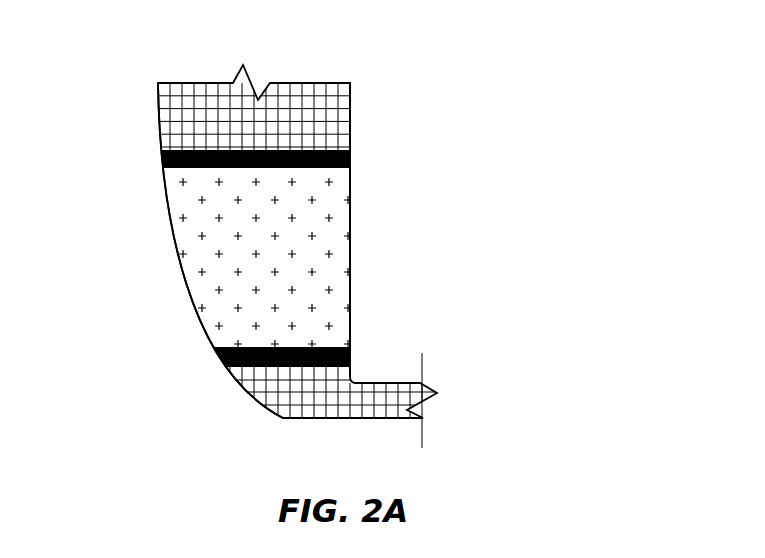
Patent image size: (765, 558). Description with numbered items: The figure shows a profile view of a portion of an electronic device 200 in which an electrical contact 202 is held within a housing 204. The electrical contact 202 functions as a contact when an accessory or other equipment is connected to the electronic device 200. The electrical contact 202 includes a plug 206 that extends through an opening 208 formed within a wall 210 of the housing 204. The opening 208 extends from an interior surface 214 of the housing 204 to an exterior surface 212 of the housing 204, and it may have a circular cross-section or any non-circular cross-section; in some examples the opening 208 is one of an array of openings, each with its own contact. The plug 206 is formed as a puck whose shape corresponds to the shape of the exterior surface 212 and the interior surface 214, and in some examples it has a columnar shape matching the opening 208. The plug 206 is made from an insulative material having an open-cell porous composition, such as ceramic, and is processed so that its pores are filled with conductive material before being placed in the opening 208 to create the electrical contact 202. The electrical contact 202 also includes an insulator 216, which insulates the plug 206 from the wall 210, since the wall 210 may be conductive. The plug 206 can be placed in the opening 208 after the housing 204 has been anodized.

The electronic device 200 is at (305, 48).
The electrical contact 202 is at (382, 152).
The housing 204 is at (384, 442).
The plug 206 is at (190, 228).
The opening 208 is at (382, 227).
The wall 210 is at (187, 107).
The exterior surface 212 is at (240, 392).
The interior surface 214 is at (350, 110).
The insulator 216 is at (162, 150).